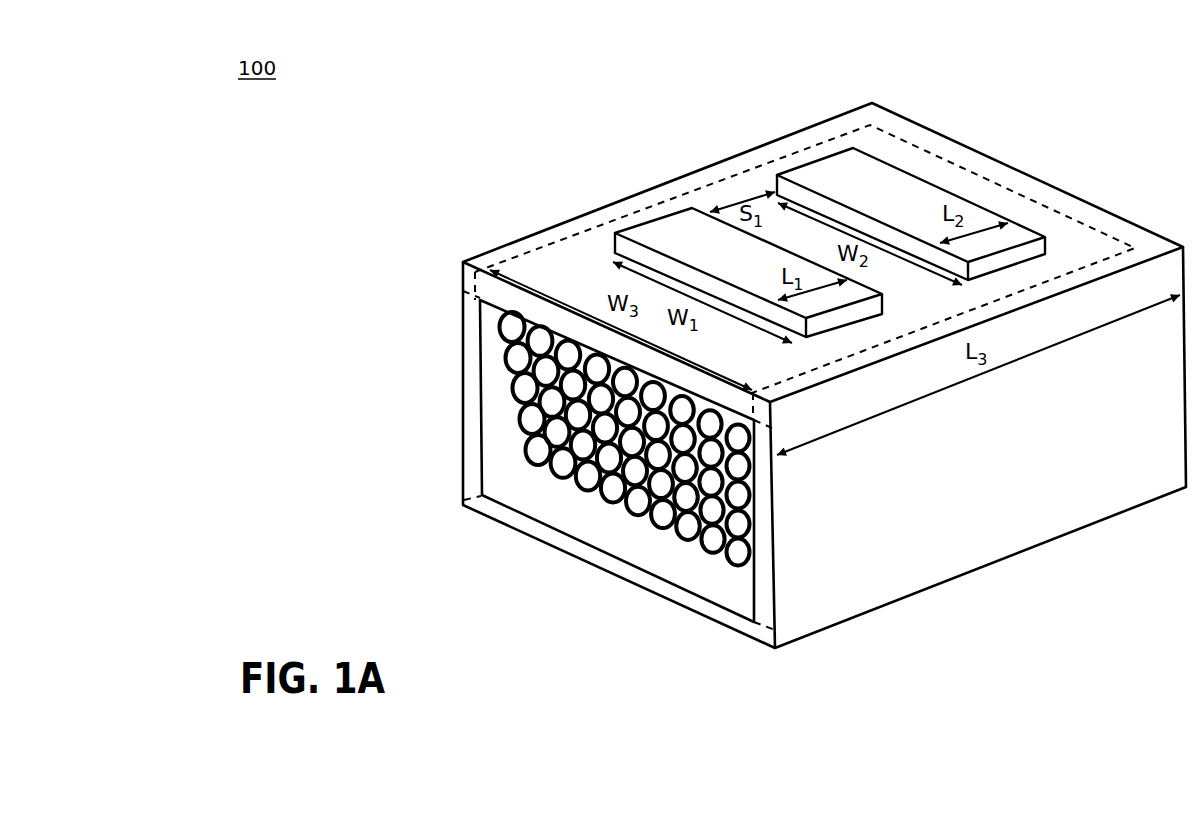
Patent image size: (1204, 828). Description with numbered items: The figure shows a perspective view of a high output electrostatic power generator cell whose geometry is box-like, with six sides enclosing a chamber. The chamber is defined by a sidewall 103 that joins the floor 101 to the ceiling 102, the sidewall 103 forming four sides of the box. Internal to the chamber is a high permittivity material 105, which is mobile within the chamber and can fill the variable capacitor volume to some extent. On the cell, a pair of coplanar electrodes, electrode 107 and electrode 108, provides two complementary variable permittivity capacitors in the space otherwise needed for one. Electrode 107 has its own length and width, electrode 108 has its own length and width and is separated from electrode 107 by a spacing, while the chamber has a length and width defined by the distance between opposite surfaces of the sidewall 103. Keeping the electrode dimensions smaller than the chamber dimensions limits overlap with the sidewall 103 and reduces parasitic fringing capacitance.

The floor 101 is at (627, 572).
The ceiling 102 is at (535, 310).
The sidewall 103 is at (477, 457).
The high permittivity material 105 is at (600, 478).
The electrode 107 is at (687, 250).
The electrode 108 is at (842, 183).